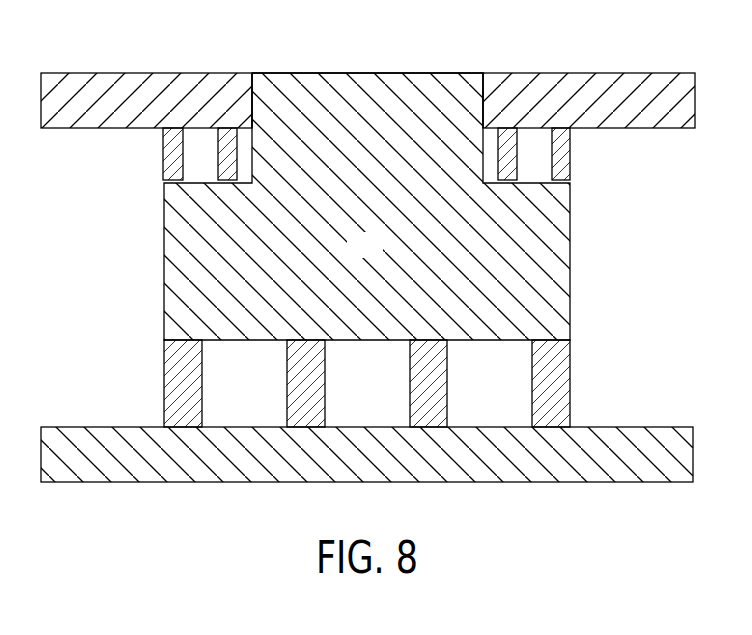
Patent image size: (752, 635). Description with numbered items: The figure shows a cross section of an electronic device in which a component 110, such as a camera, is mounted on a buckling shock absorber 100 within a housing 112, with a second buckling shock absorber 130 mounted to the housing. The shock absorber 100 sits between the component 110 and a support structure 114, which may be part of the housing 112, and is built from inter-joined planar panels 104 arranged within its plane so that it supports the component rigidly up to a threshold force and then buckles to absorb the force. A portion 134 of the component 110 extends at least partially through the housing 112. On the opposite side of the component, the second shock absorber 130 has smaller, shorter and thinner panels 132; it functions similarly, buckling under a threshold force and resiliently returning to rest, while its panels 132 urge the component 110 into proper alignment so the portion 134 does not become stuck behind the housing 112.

The shock absorber 100 is at (392, 256).
The panels 104 is at (184, 395).
The component 110 is at (383, 256).
The housing 112 is at (140, 88).
The support structure 114 is at (678, 459).
The second shock absorber 130 is at (587, 152).
The panels 132 is at (232, 137).
The portion 134 is at (377, 88).